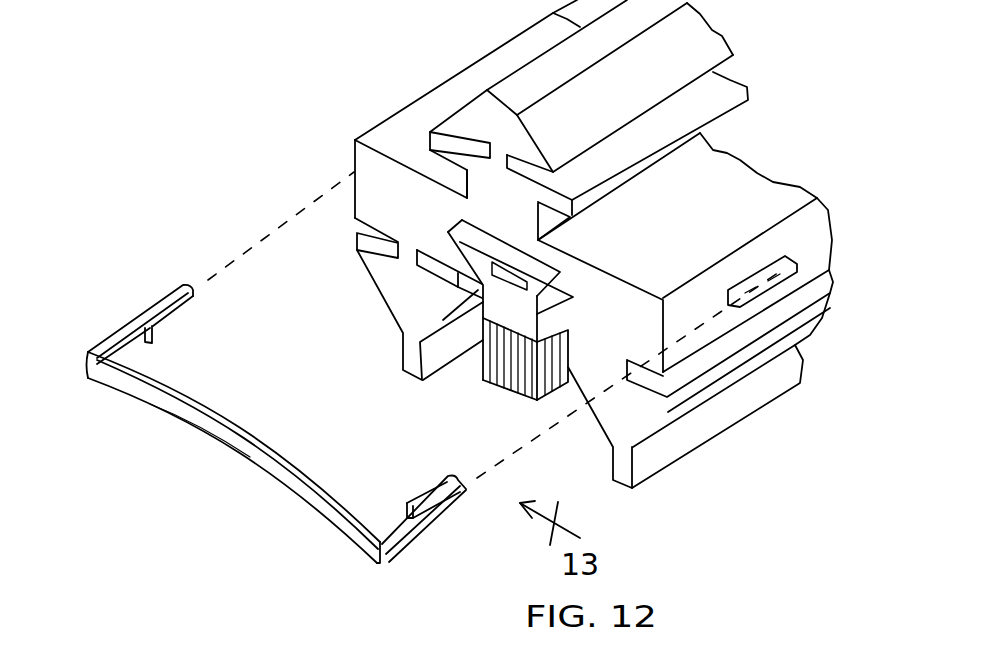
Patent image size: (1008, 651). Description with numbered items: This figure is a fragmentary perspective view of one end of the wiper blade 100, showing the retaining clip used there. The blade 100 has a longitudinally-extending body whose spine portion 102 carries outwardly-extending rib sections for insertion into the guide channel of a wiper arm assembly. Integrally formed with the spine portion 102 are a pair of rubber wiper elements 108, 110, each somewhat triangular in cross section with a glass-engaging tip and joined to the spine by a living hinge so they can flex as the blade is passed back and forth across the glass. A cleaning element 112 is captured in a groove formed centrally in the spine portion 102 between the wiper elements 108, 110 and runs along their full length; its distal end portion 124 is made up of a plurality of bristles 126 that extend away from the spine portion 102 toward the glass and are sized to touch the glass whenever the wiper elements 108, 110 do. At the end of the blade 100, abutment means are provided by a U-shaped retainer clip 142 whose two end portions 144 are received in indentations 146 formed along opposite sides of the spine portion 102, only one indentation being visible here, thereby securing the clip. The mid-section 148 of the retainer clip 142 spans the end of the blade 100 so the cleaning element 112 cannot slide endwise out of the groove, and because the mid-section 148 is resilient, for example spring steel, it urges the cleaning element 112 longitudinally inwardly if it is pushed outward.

The blade 100 is at (351, 68).
The spine portion 102 is at (814, 232).
The rubber wiper element 108 is at (391, 302).
The rubber wiper element 110 is at (657, 452).
The cleaning element 112 is at (478, 312).
The distal end portion 124 is at (483, 372).
The bristles 126 is at (520, 400).
The retainer clip 142 is at (322, 510).
The end portions 144 is at (112, 333).
The indentation 146 is at (786, 257).
The mid-section 148 is at (230, 446).